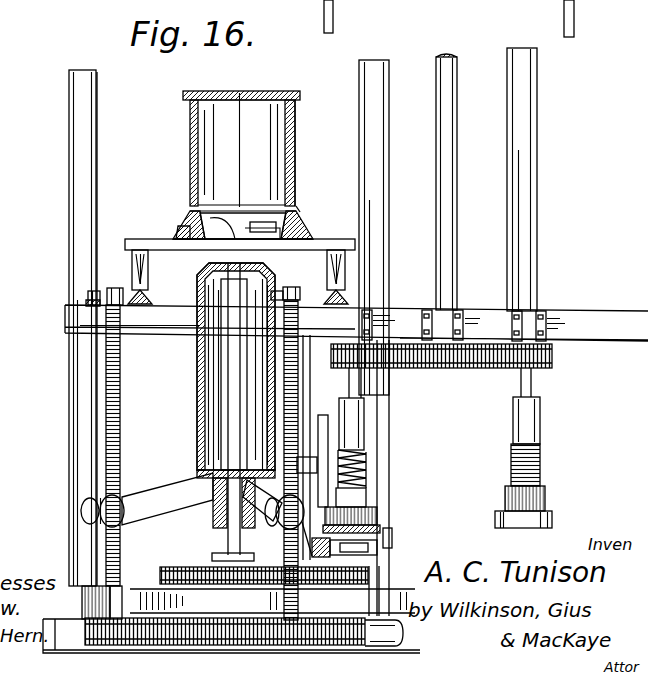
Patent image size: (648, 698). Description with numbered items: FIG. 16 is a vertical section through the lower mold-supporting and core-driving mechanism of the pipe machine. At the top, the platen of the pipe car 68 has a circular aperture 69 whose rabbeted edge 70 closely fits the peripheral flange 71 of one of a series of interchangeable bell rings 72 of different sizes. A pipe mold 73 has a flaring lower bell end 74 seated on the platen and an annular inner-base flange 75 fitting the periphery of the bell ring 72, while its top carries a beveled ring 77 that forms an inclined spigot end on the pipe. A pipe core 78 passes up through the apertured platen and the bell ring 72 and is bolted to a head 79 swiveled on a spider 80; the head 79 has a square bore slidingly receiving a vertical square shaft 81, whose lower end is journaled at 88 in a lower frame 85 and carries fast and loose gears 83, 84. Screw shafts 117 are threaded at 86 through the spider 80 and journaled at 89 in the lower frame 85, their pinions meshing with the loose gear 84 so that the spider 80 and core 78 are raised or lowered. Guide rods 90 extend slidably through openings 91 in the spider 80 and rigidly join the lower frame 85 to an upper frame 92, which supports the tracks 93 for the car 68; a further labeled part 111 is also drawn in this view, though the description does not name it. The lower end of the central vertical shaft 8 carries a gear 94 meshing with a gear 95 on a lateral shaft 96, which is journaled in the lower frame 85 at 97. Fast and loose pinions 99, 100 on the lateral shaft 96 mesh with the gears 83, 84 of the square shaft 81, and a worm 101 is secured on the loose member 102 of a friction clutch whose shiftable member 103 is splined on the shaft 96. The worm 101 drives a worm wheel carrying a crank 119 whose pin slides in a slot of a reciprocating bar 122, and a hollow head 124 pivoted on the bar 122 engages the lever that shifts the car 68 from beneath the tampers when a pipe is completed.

The central vertical shaft 8 is at (303, 332).
The pipe car 68 is at (136, 240).
The circular aperture 69 is at (196, 222).
The rabbeted edge 70 is at (182, 230).
The peripheral flange 71 is at (176, 236).
The bell ring 72 is at (300, 183).
The pipe mold 73 is at (190, 128).
The flaring lower bell end 74 is at (303, 209).
The annular inner-base flange 75 is at (196, 251).
The beveled ring 77 is at (183, 95).
The pipe core 78 is at (275, 272).
The head 79 is at (200, 463).
The spider 80 is at (173, 505).
The vertical square shaft 81 is at (195, 416).
The fast gear 83 is at (115, 574).
The loose gear 84 is at (197, 638).
The lower frame 85 is at (272, 633).
The threaded engagement 86 is at (117, 525).
The journal 88 is at (227, 553).
The journal 89 is at (83, 623).
The guide rod 90 is at (97, 356).
The opening 91 is at (122, 507).
The upper frame 92 is at (188, 323).
The track 93 is at (132, 306).
The gear 94 is at (462, 310).
The gear 95 is at (361, 383).
The lateral shaft 96 is at (366, 343).
The journal 97 is at (77, 300).
The fast pinion 99 is at (110, 633).
The loose pinion 100 is at (373, 646).
The worm 101 is at (366, 479).
The loose clutch member 102 is at (380, 508).
The shiftable clutch member 103 is at (380, 527).
The threaded screw 111 is at (110, 386).
The screw shaft 117 is at (316, 293).
The crank 119 is at (352, 460).
The reciprocating bar 122 is at (330, 457).
The hollow head 124 is at (318, 436).